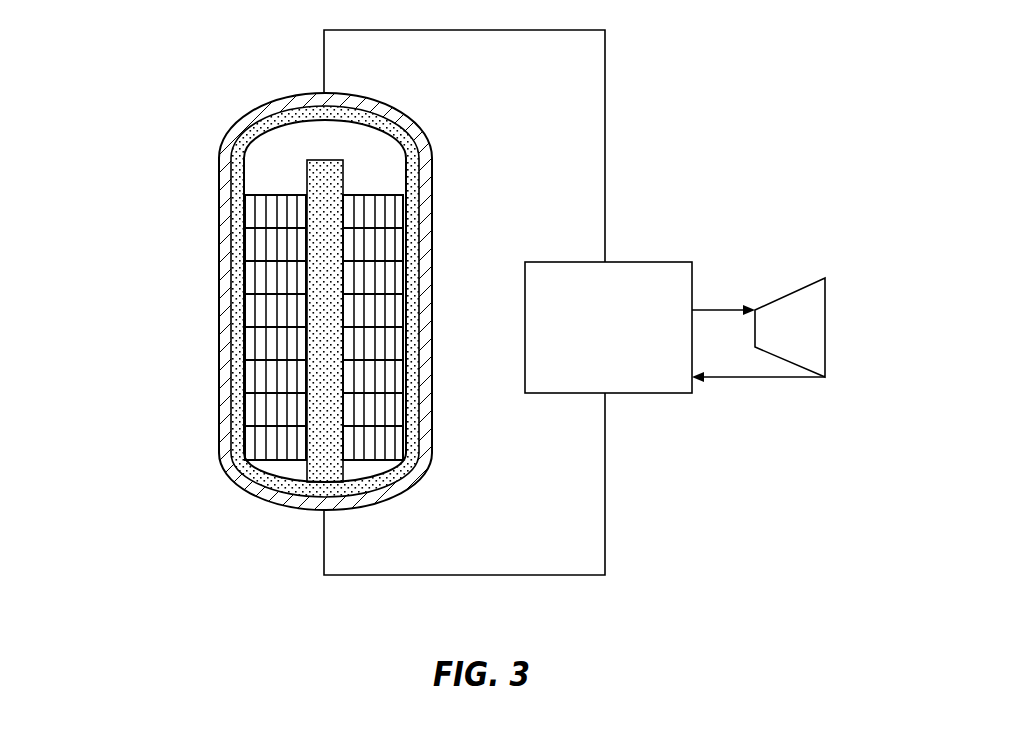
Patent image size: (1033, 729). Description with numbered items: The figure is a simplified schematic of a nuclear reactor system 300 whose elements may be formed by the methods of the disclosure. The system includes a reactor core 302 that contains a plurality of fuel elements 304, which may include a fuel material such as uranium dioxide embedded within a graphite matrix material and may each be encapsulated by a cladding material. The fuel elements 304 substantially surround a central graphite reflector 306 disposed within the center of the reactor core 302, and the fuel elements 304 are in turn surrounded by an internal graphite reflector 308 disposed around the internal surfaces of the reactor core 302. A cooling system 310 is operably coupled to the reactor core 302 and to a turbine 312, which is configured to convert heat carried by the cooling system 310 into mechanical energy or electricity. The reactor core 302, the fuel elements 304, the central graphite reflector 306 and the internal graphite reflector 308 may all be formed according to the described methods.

The nuclear reactor system 300 is at (141, 110).
The reactor core 302 is at (390, 96).
The fuel elements 304 is at (265, 308).
The central graphite reflector 306 is at (345, 178).
The internal graphite reflector 308 is at (403, 187).
The cooling system 310 is at (632, 252).
The turbine 312 is at (835, 297).